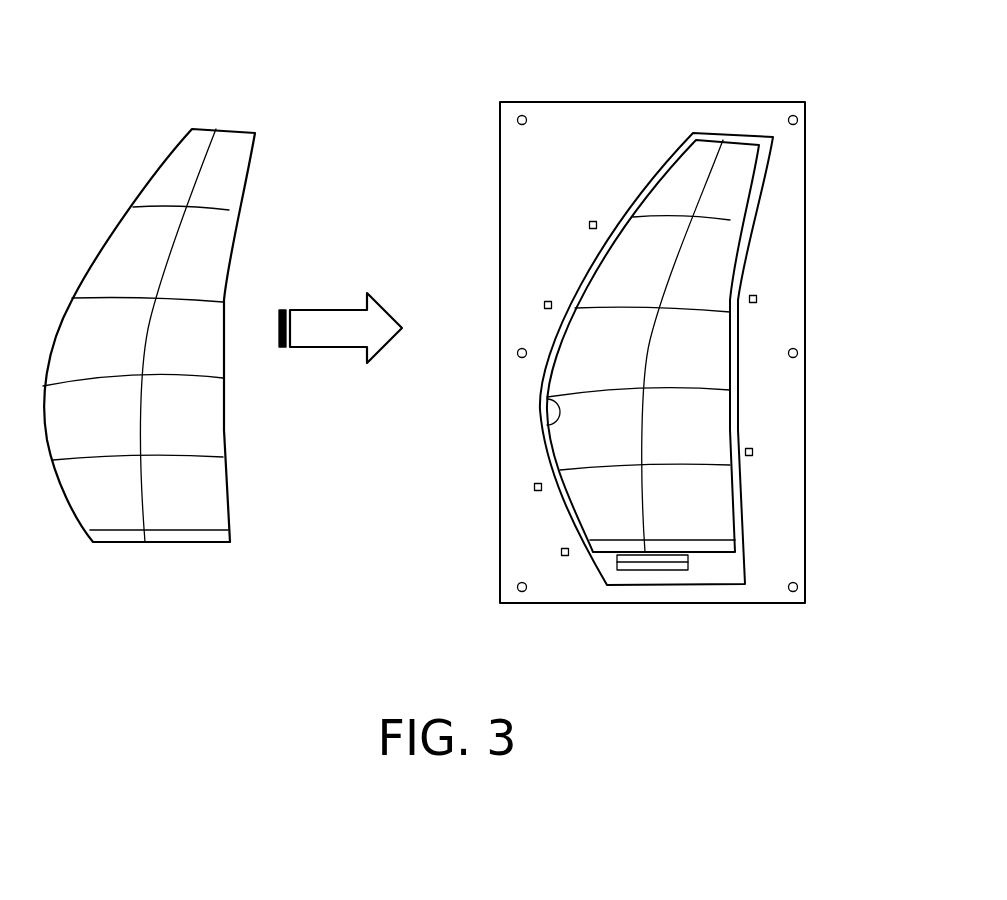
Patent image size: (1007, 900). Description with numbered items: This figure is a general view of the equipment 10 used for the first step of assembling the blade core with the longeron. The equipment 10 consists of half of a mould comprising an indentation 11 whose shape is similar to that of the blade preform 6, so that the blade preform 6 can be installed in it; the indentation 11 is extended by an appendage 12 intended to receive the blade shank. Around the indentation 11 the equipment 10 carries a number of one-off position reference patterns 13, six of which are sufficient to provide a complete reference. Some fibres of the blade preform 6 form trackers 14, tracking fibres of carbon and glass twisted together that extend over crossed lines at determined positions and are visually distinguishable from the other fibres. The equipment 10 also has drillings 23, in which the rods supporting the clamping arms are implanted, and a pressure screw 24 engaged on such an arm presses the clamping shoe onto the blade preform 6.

The blade preform 6 is at (242, 482).
The equipment 10 is at (830, 316).
The indentation 11 is at (540, 425).
The appendage 12 is at (677, 566).
The position reference patterns 13 is at (522, 115).
The trackers 14 is at (198, 180).
The drilling 23 is at (589, 225).
The pressure screw 24 is at (630, 208).